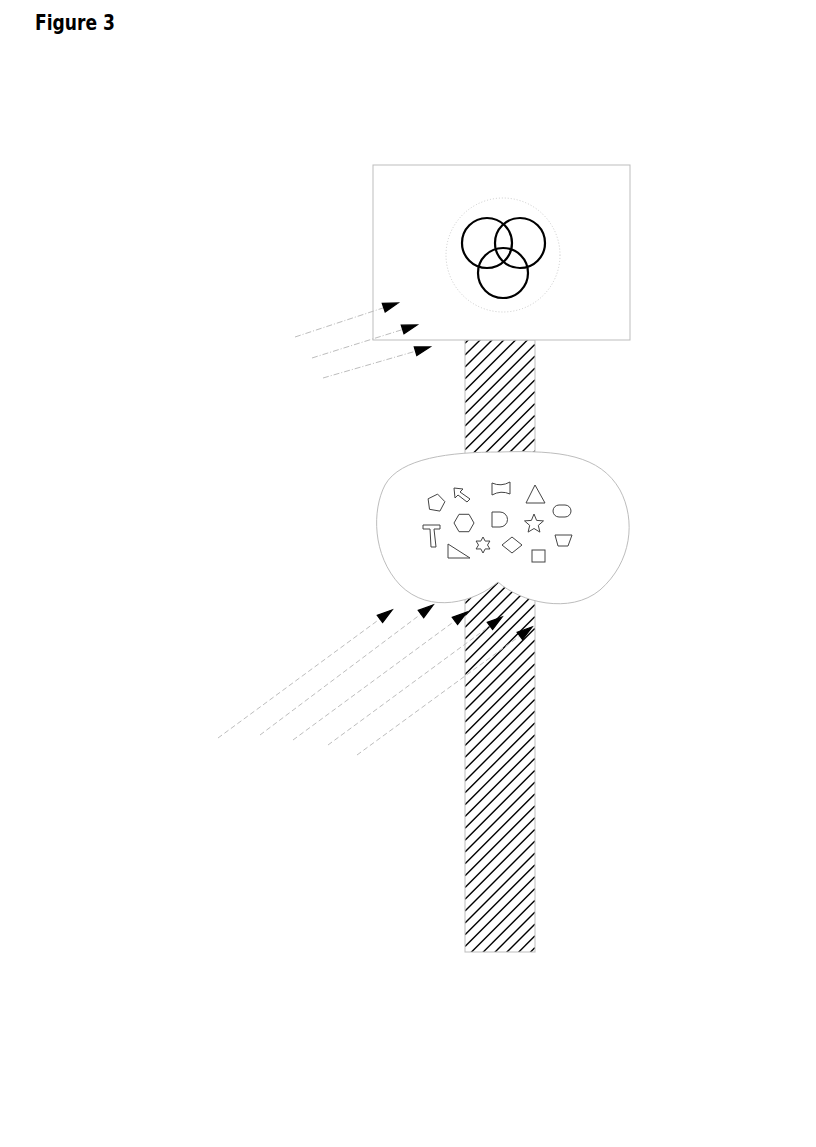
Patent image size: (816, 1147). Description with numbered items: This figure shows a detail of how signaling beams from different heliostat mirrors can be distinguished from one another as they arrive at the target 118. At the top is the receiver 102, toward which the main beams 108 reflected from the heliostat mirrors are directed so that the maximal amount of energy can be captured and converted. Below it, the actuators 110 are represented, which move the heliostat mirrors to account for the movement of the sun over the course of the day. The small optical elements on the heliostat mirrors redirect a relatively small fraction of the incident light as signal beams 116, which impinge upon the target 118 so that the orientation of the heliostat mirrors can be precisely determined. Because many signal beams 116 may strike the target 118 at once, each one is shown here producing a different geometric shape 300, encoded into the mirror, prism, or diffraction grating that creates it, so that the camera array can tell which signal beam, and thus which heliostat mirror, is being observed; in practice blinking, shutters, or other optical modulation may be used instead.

The receiver 102 is at (552, 165).
The main beam 108 is at (348, 382).
The actuators 110 is at (538, 773).
The signal beam 116 is at (265, 737).
The target 118 is at (527, 525).
The shapes 300 is at (433, 492).